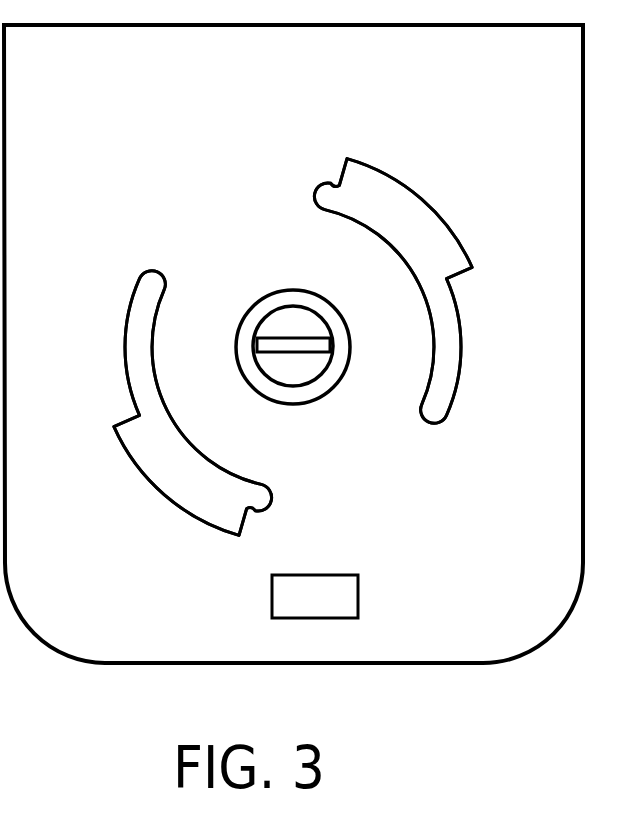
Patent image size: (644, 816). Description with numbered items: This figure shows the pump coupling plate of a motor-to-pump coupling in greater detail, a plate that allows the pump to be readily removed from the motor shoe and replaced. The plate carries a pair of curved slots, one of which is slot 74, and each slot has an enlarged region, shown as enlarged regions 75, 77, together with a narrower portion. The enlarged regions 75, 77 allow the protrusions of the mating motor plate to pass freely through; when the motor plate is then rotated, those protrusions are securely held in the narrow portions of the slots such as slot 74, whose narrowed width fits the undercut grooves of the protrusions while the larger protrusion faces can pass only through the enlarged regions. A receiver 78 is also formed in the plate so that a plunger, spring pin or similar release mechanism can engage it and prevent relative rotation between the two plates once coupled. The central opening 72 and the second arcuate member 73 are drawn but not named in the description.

The screw 72 is at (278, 320).
The first arcuate cam member 73 is at (452, 357).
The slot 74 is at (145, 303).
The enlarged region 75 is at (192, 515).
The enlarged region 77 is at (425, 203).
The receiver 78 is at (352, 595).